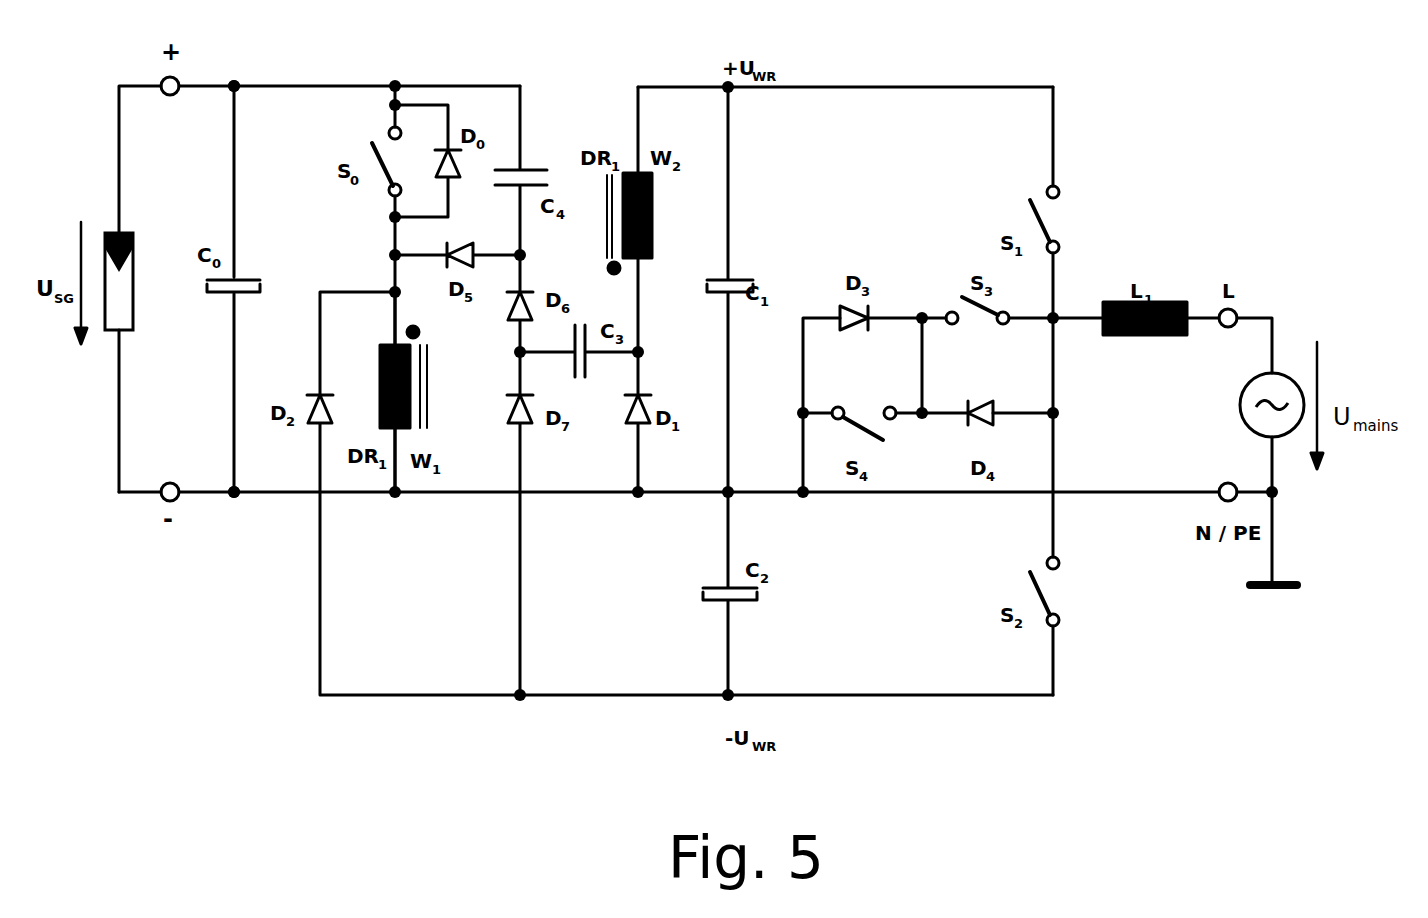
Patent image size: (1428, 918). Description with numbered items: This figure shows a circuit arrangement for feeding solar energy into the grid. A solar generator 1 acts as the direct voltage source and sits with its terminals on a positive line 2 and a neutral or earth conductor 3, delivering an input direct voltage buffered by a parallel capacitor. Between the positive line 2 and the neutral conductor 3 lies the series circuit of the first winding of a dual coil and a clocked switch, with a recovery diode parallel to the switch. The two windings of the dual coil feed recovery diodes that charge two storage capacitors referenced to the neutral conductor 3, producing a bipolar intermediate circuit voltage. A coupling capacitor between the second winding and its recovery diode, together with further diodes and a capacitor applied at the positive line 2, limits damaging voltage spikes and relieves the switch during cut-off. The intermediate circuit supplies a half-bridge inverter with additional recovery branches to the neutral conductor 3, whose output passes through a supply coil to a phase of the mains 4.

The solar generator 1 is at (140, 280).
The positive line 2 is at (248, 78).
The neutral or earth conductor 3 is at (240, 508).
The mains 4 is at (1237, 412).